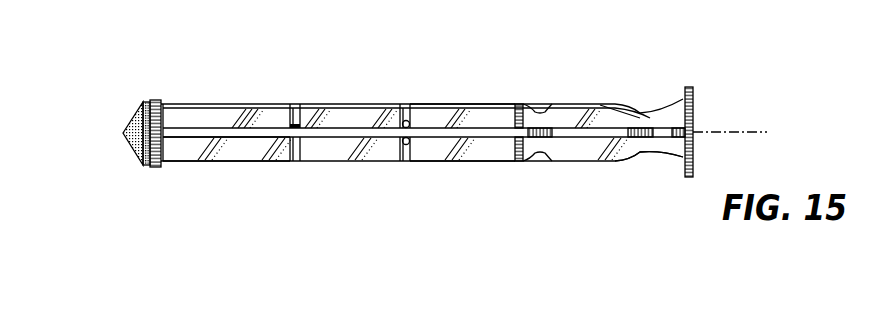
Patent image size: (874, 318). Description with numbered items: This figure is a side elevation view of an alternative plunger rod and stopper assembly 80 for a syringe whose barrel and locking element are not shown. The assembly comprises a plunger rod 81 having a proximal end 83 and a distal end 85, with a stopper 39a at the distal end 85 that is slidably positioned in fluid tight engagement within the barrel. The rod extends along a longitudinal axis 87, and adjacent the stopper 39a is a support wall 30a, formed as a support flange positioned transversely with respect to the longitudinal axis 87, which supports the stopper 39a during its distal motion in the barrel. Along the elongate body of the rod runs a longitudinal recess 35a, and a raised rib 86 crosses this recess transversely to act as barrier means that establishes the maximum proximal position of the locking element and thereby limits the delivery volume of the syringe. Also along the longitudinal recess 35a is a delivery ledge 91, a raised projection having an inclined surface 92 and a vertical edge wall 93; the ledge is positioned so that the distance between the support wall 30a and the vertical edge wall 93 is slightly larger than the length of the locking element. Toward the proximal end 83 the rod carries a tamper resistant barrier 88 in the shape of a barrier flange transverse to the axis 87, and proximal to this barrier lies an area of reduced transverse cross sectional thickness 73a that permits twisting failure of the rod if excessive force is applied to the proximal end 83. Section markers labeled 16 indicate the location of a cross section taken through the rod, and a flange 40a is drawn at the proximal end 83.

The plunger rod and stopper assembly 80 is at (553, 56).
The support wall 30a is at (168, 104).
The plunger rod 81 is at (312, 150).
The distal end 85 is at (207, 162).
The stopper 39a is at (130, 140).
The inclined surface 92 is at (288, 108).
The delivery ledge 91 is at (292, 127).
The vertical edge wall 93 is at (305, 126).
The raised rib 86 is at (401, 124).
The section line 16 is at (437, 95).
The longitudinal recess 35a is at (490, 113).
The area of reduced transverse cross sectional thickness 73a is at (536, 140).
The tamper resistant barrier 88 is at (522, 105).
The proximal end 83 is at (624, 146).
The end flange 40a is at (688, 178).
The longitudinal axis 87 is at (753, 132).